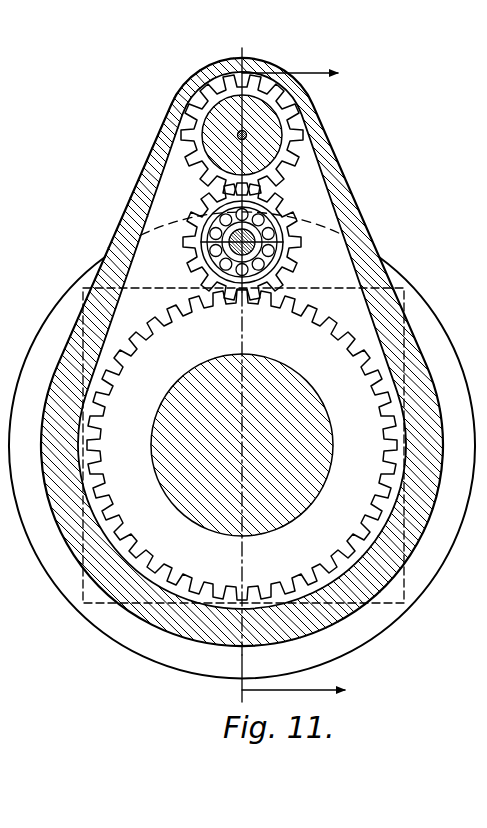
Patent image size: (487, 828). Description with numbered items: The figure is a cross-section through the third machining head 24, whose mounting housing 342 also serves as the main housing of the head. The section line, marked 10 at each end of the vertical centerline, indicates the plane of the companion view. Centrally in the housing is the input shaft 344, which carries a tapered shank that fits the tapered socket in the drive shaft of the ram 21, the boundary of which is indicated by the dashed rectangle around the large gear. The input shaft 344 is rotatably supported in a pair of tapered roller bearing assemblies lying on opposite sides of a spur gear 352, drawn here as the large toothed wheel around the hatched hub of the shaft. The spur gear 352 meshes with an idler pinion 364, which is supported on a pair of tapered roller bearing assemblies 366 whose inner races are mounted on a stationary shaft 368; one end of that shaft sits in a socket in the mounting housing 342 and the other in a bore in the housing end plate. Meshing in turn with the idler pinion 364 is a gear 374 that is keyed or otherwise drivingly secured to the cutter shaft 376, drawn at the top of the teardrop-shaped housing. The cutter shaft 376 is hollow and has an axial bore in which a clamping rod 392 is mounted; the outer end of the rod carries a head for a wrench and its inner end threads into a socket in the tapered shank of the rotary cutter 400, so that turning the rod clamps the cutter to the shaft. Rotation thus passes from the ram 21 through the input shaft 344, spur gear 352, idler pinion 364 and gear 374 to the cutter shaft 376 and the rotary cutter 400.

The rotary cutter 400 is at (143, 375).
The section line 10 is at (316, 382).
The mounting housing 342 is at (374, 241).
The third machining head 24 is at (110, 245).
The idler pinion 364 is at (292, 211).
The gear 374 is at (300, 109).
The cutter shaft 376 is at (304, 157).
The clamping rod 392 is at (248, 135).
The tapered roller bearing assemblies 366 is at (284, 249).
The stationary shaft 368 is at (222, 246).
The spur gear 352 is at (338, 327).
The input shaft 344 is at (321, 490).
The ram 21 is at (80, 576).